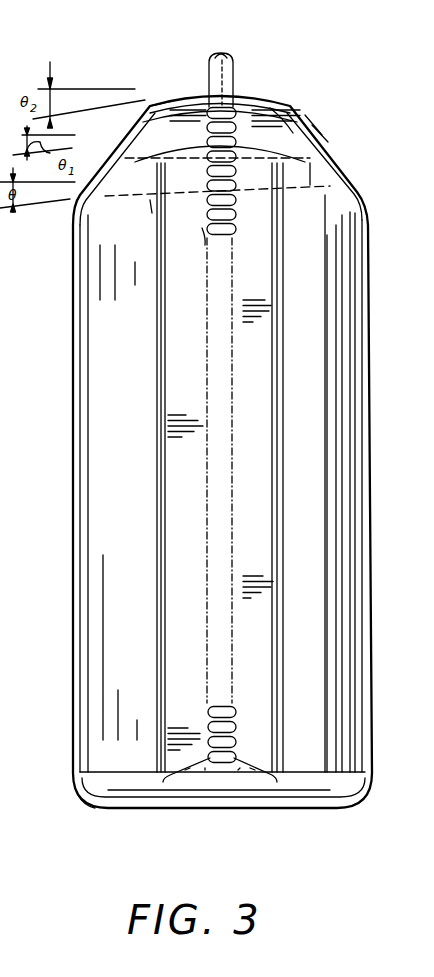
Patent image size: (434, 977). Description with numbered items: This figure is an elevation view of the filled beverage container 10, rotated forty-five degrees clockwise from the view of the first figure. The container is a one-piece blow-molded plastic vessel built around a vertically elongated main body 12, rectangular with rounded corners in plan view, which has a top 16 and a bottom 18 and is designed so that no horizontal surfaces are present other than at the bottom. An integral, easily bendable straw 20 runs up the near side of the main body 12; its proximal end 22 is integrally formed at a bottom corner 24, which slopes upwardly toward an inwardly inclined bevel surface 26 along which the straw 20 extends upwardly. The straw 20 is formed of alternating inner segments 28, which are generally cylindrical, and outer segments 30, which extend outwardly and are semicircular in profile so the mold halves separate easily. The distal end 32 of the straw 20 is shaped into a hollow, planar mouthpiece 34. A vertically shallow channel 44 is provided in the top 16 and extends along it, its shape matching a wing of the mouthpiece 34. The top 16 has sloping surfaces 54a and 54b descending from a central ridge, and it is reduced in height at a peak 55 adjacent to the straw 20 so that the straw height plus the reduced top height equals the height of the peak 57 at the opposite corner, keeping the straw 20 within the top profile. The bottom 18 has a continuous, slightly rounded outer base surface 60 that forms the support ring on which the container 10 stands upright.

The beverage container 10 is at (0, 358).
The main body 12 is at (0, 262).
The top 16 is at (147, 98).
The bottom 18 is at (268, 810).
The straw 20 is at (190, 145).
The proximal end 22 is at (220, 768).
The bottom corner 24 is at (232, 785).
The bevel surface 26 is at (253, 194).
The inner segments 28 is at (234, 208).
The outer segments 30 is at (206, 226).
The distal end 32 is at (258, 86).
The mouthpiece 34 is at (210, 68).
The channel 44 is at (334, 129).
The sloping surface 54a is at (171, 92).
The sloping surface 54b is at (331, 109).
The peak 55 is at (283, 118).
The peak 57 is at (227, 57).
The outer base surface 60 is at (128, 818).